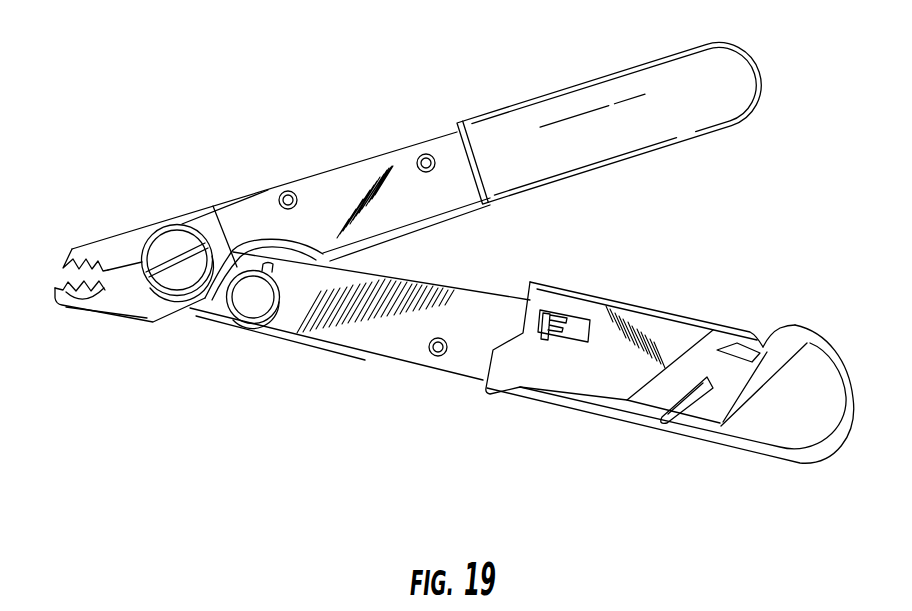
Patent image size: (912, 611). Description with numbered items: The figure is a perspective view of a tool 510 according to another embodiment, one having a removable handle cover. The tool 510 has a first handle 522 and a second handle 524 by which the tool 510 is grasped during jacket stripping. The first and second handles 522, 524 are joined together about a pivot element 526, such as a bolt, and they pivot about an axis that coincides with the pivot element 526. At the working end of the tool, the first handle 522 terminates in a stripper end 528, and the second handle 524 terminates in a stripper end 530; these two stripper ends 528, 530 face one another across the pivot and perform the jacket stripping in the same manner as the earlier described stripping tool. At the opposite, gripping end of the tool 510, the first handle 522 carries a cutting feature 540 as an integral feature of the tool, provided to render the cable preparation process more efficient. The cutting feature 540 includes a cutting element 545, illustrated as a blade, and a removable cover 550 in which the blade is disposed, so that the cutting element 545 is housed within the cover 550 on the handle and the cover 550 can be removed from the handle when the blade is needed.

The tool 510 is at (276, 123).
The first handle 522 is at (306, 388).
The second handle 524 is at (566, 68).
The pivot element 526 is at (172, 240).
The stripper end 528 is at (65, 245).
The stripper end 530 is at (52, 308).
The cutting feature 540 is at (792, 302).
The cutting element 545 is at (773, 333).
The removable cover 550 is at (622, 442).